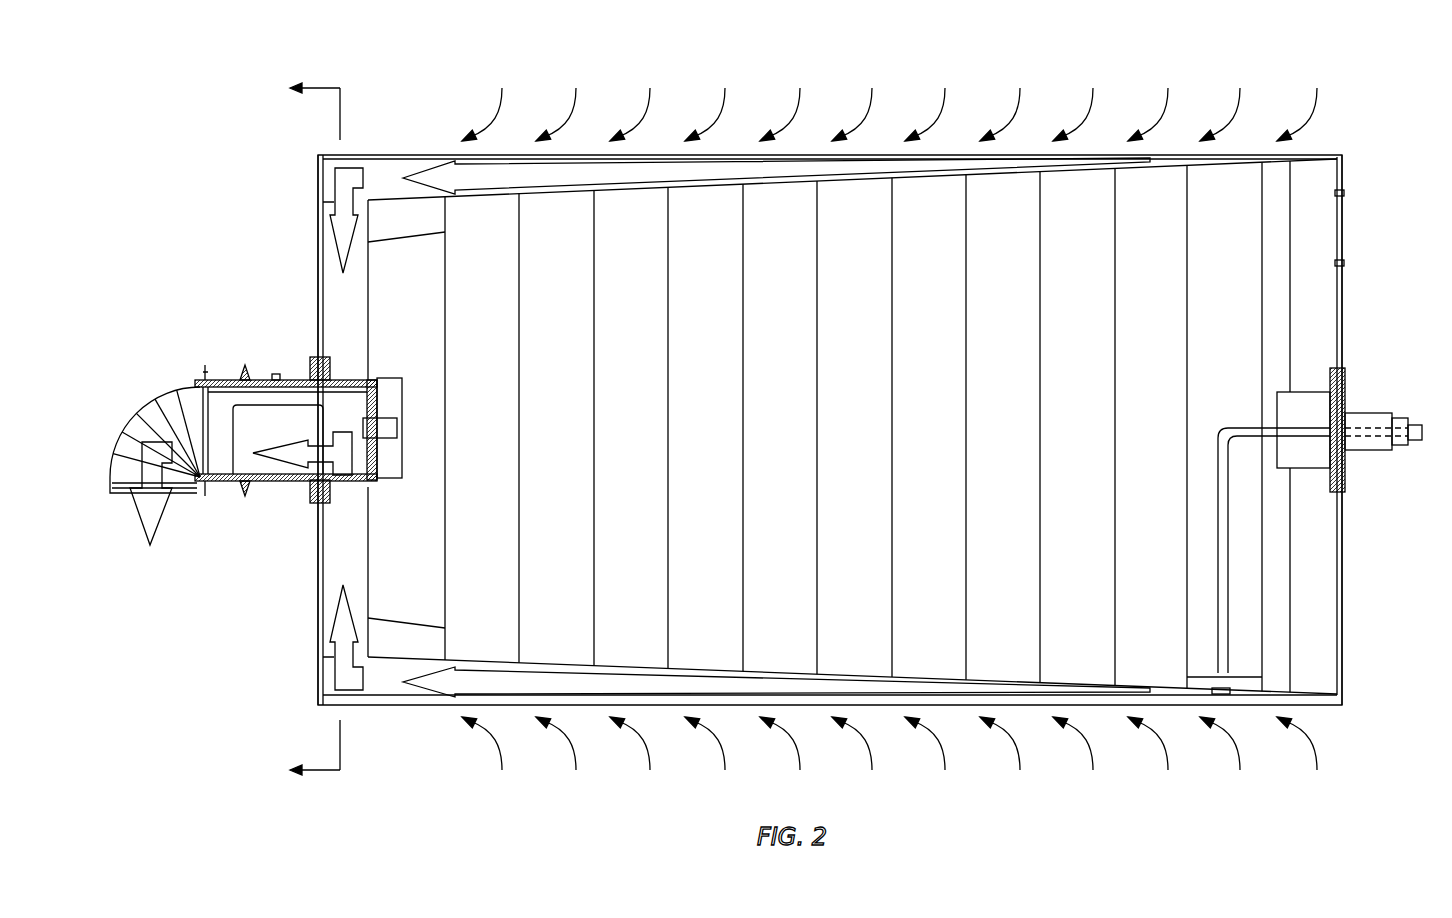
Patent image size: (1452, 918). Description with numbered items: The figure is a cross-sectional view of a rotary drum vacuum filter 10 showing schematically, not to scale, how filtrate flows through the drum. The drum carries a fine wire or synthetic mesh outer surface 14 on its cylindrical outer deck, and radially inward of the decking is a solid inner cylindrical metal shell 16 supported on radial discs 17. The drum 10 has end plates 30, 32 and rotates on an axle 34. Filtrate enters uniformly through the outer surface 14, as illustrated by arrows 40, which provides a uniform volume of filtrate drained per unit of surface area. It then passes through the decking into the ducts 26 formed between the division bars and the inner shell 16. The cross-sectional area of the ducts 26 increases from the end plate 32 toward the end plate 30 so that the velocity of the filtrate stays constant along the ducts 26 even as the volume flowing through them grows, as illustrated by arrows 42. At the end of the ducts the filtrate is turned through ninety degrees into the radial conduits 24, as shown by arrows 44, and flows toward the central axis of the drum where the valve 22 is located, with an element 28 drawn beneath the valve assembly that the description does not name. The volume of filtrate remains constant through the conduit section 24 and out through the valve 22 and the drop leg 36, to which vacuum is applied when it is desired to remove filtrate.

The rotary drum vacuum filter 10 is at (186, 630).
The outer surface 14 is at (1040, 154).
The inner cylindrical metal shell 16 is at (1000, 177).
The radial discs 17 is at (966, 285).
The valve 22 is at (292, 396).
The radial conduits 24 is at (330, 307).
The ducts 26 is at (388, 170).
The burner mounting plate 28 is at (265, 490).
The end plate 30 is at (318, 272).
The end plate 32 is at (1338, 308).
The axle 34 is at (1378, 453).
The drop leg 36 is at (168, 388).
The arrows 40 is at (787, 133).
The arrows 42 is at (493, 190).
The arrows 44 is at (323, 233).